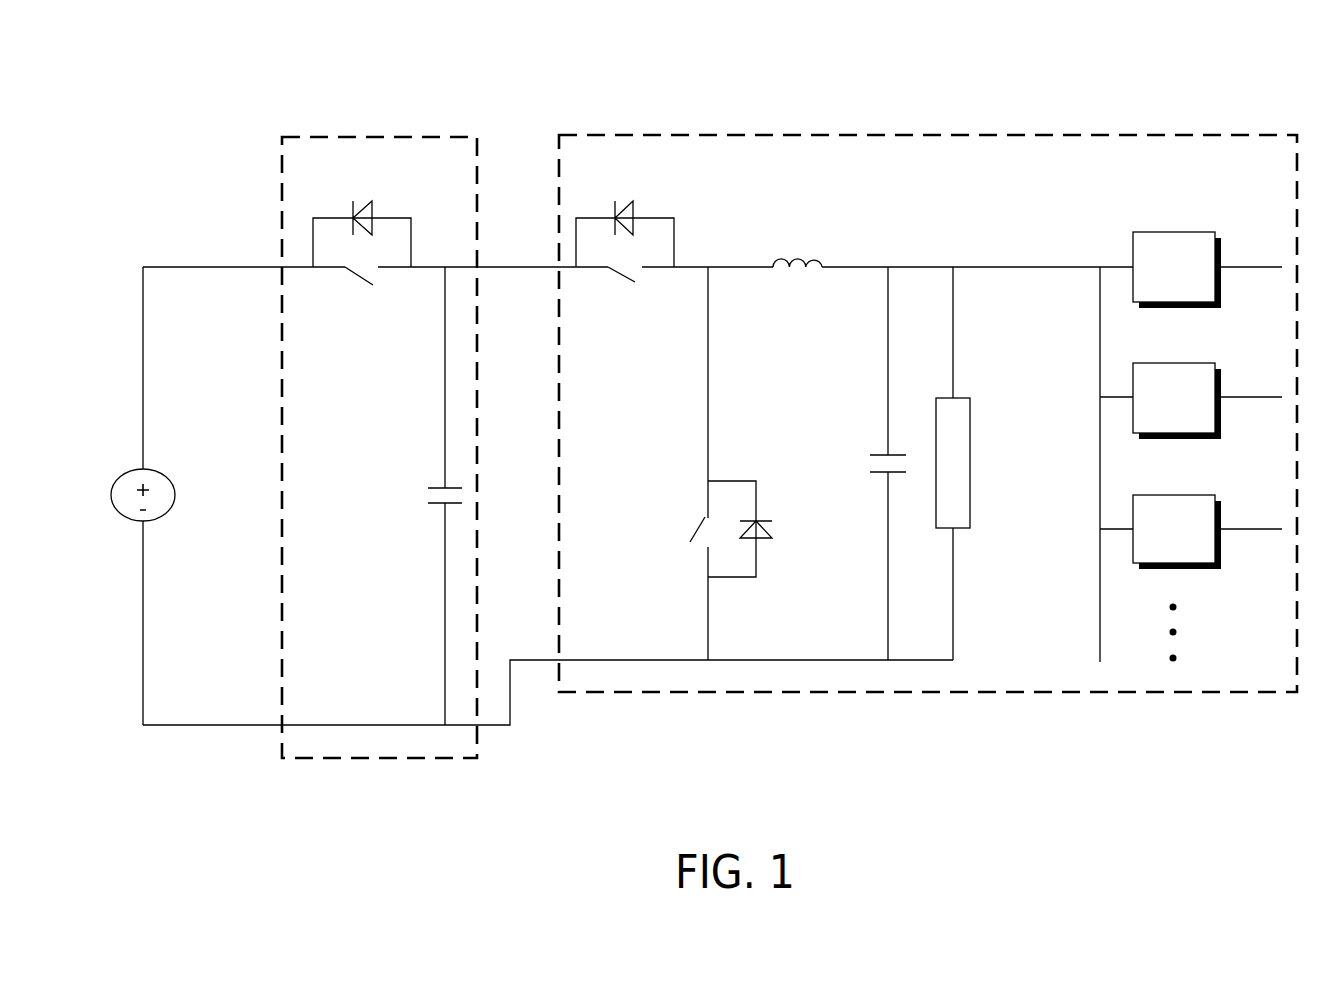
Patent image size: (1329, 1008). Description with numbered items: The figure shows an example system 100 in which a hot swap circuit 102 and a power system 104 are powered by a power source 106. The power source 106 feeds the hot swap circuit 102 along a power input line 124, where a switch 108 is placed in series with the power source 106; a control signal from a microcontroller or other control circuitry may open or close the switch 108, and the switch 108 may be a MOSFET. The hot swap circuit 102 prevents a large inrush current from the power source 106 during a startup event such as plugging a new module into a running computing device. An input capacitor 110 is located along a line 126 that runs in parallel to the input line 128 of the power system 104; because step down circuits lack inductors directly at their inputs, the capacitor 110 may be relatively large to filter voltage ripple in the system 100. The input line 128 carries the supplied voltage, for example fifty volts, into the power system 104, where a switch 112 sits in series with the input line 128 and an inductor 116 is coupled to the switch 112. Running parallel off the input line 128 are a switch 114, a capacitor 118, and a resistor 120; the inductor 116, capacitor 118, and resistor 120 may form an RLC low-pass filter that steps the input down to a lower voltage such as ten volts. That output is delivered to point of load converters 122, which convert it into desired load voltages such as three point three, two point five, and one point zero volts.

The system 100 is at (1240, 71).
The hot swap circuit 102 is at (377, 414).
The power system 104 is at (928, 381).
The power source 106 is at (152, 522).
The switch 108 is at (395, 274).
The input capacitor 110 is at (435, 480).
The switch 112 is at (662, 277).
The switch 114 is at (698, 517).
The inductor 116 is at (817, 254).
The capacitor 118 is at (876, 450).
The resistor 120 is at (963, 387).
The point of load converters 122 is at (1206, 210).
The power input line 124 is at (152, 378).
The line 126 is at (442, 379).
The input line 128 is at (495, 272).